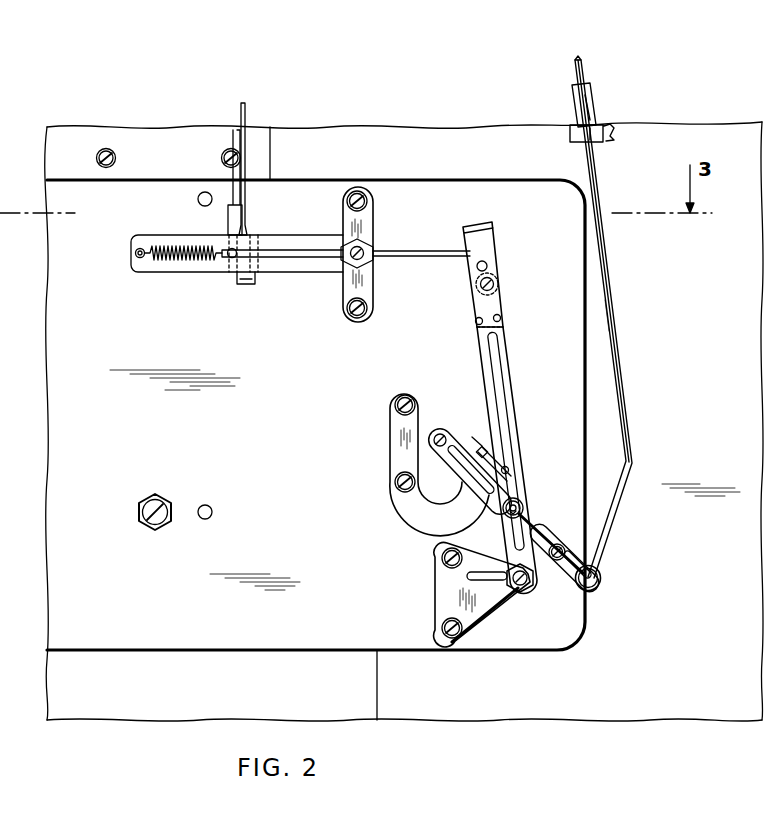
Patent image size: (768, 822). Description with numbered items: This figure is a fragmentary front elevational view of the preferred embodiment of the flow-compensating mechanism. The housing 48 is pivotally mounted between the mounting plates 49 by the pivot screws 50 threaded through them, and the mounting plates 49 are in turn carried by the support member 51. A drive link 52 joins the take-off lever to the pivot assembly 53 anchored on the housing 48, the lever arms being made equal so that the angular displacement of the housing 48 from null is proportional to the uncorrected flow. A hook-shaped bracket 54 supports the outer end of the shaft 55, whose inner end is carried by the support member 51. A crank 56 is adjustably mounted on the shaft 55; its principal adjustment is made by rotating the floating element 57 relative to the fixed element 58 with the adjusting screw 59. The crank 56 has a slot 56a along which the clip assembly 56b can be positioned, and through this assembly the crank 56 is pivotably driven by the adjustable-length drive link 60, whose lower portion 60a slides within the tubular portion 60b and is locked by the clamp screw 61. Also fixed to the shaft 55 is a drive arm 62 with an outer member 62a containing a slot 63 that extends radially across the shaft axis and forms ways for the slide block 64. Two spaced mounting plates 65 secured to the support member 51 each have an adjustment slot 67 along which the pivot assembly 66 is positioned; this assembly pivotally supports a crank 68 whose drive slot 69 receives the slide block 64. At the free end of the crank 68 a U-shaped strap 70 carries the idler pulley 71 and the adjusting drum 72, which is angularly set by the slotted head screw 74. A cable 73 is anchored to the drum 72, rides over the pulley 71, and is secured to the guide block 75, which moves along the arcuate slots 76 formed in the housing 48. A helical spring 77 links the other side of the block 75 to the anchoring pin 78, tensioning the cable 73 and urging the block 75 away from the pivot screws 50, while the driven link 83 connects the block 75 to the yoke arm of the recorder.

The housing 48 is at (153, 265).
The mounting plates 49 is at (368, 222).
The pivot screws 50 is at (355, 262).
The support member 51 is at (80, 400).
The drive link 52 is at (247, 122).
The pivot assembly 53 is at (243, 284).
The hook-shaped bracket 54 is at (390, 443).
The shaft 55 is at (482, 460).
The crank 56 is at (543, 552).
The slot 56a is at (549, 537).
The clip assembly 56b is at (601, 577).
The floating element 57 is at (487, 453).
The fixed element 58 is at (508, 468).
The adjusting screw 59 is at (481, 445).
The drive link 60 is at (630, 366).
The lower portion 60a is at (620, 311).
The tubular portion 60b is at (598, 99).
The clamp screw 61 is at (616, 135).
The drive arm 62 is at (470, 490).
The outer member 62a is at (428, 452).
The slot 63 is at (460, 470).
The slide block 64 is at (521, 508).
The mounting plates 65 is at (445, 597).
The pivot assembly 66 is at (523, 592).
The adjustment slot 67 is at (488, 580).
The crank 68 is at (511, 385).
The drive slot 69 is at (498, 356).
The U-shaped strap 70 is at (488, 245).
The idler pulley 71 is at (479, 270).
The adjusting drum 72 is at (475, 313).
The cable 73 is at (420, 260).
The slotted head screw 74 is at (497, 286).
The guide block 75 is at (228, 220).
The arcuate slots 76 is at (298, 263).
The helical spring 77 is at (186, 262).
The anchoring pin 78 is at (135, 253).
The driven link 83 is at (233, 140).